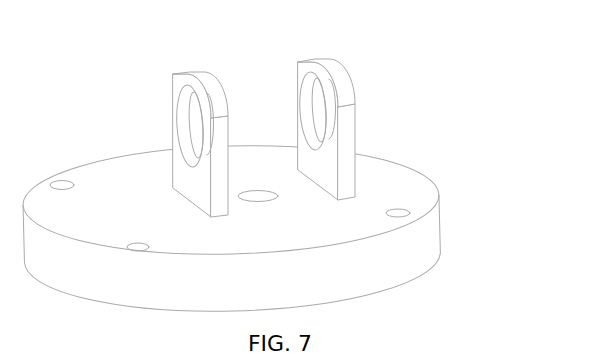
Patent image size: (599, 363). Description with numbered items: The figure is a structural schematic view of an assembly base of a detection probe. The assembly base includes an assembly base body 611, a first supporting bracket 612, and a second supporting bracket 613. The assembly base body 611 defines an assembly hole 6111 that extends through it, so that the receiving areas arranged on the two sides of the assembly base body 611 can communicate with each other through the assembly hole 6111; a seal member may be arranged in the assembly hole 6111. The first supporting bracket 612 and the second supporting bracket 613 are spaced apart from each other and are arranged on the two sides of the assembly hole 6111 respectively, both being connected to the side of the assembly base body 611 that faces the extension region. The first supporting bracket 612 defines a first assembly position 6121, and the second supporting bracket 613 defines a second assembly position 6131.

The assembly base body 611 is at (420, 238).
The assembly hole 6111 is at (258, 193).
The first supporting bracket 612 is at (385, 118).
The first assembly position 6121 is at (357, 123).
The second supporting bracket 613 is at (135, 139).
The second assembly position 6131 is at (195, 136).